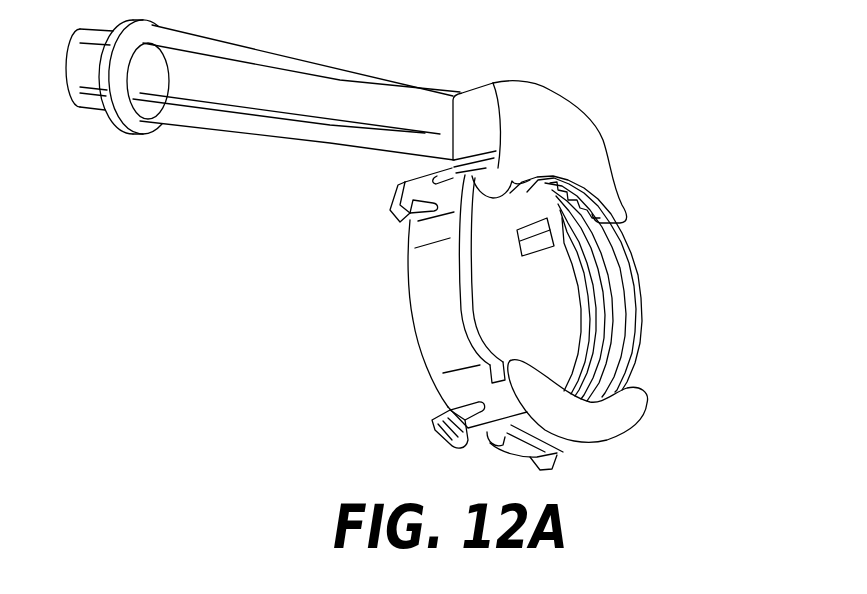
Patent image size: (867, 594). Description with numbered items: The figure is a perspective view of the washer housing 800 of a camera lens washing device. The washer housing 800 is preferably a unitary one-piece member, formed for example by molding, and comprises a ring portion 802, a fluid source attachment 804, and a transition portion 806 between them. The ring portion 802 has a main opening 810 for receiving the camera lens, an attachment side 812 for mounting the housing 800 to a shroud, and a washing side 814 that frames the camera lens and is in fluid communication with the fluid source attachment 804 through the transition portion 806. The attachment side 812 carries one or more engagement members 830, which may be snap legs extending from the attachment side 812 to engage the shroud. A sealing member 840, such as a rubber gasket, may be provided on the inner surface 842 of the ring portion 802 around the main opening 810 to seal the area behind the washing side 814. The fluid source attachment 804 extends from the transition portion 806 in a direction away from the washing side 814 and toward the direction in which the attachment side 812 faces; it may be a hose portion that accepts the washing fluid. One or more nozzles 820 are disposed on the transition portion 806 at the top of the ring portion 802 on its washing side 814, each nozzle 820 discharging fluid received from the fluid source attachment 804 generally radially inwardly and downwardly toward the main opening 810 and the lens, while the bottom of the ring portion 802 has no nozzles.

The washer housing 800 is at (663, 106).
The ring portion 802 is at (644, 307).
The fluid source attachment 804 is at (218, 113).
The transition portion 806 is at (540, 104).
The main opening 810 is at (540, 282).
The attachment side 812 is at (423, 342).
The washing side 814 is at (640, 368).
The nozzle 820 is at (524, 192).
The engagement member 830 is at (437, 426).
The sealing member 840 is at (591, 357).
The inner surface 842 is at (617, 281).